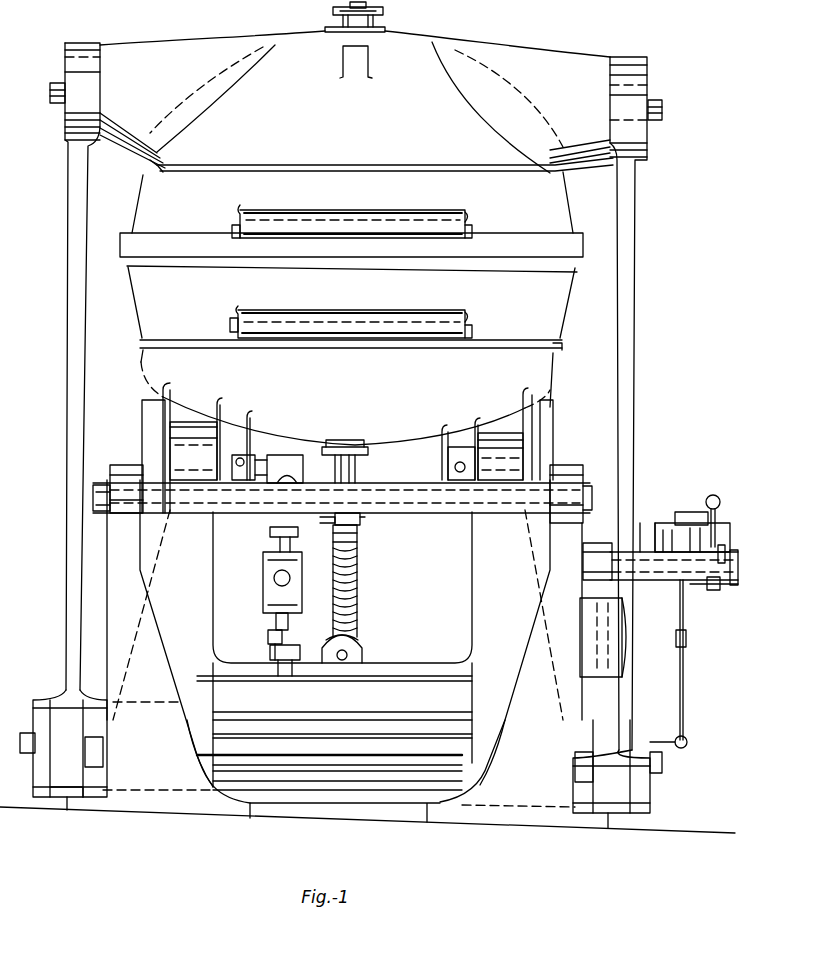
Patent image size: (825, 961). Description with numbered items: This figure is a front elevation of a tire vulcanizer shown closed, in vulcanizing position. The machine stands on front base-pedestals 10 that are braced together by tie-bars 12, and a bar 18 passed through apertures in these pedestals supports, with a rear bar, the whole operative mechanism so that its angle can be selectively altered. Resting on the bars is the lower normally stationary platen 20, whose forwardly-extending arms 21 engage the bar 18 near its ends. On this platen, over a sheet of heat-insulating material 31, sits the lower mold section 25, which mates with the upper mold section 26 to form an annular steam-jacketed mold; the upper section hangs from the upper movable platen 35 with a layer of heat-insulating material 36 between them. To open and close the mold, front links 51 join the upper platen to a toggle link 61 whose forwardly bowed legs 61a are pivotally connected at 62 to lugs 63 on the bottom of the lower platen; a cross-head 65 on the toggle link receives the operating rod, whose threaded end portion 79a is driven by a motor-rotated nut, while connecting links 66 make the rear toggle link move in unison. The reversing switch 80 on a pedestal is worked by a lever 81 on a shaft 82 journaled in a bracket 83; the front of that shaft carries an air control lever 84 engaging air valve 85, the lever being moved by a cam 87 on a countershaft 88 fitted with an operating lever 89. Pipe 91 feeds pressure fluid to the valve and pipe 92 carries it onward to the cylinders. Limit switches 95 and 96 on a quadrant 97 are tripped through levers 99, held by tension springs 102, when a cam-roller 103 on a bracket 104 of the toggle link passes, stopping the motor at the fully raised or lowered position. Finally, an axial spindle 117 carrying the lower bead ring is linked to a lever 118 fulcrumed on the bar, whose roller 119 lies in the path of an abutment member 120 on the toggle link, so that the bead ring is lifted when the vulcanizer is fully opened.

The base-pedestal 10 is at (250, 805).
The tie-bar 12 is at (436, 514).
The bar 18 is at (407, 495).
The lower normally stationary platen 20 is at (347, 397).
The forwardly-extending arm 21 is at (153, 413).
The lower mold section 25 is at (351, 307).
The upper mold section 26 is at (351, 222).
The sheet of heat-insulating material 31 is at (550, 347).
The upper movable platen 35 is at (356, 87).
The layer of heat-insulating material 36 is at (157, 153).
The link 51 is at (65, 375).
The toggle link 61 is at (398, 700).
The leg of toggle link 61a is at (208, 563).
The pivotal connection 62 is at (153, 438).
The lug 63 is at (167, 452).
The cross-head 65 is at (320, 782).
The connecting link 66 is at (45, 698).
The threaded end portion of operating rod 79a is at (358, 567).
The reversing switch 80 is at (613, 633).
The lever 81 is at (605, 587).
The shaft 82 is at (636, 548).
The bracket 83 is at (650, 581).
The air control lever 84 is at (735, 585).
The air valve 85 is at (713, 590).
The cam 87 is at (727, 545).
The countershaft 88 is at (696, 486).
The operating lever 89 is at (708, 503).
The pipe 91 is at (696, 636).
The pipe 92 is at (680, 683).
The limit switch 95 is at (297, 560).
The limit switch 96 is at (290, 455).
The quadrant 97 is at (262, 587).
The lever 99 is at (288, 628).
The tension spring 102 is at (280, 533).
The cam-roller 103 is at (268, 647).
The bracket 104 is at (294, 660).
The axial spindle 117 is at (363, 467).
The lever 118 is at (345, 480).
The roller 119 is at (357, 545).
The abutment member 120 is at (358, 620).